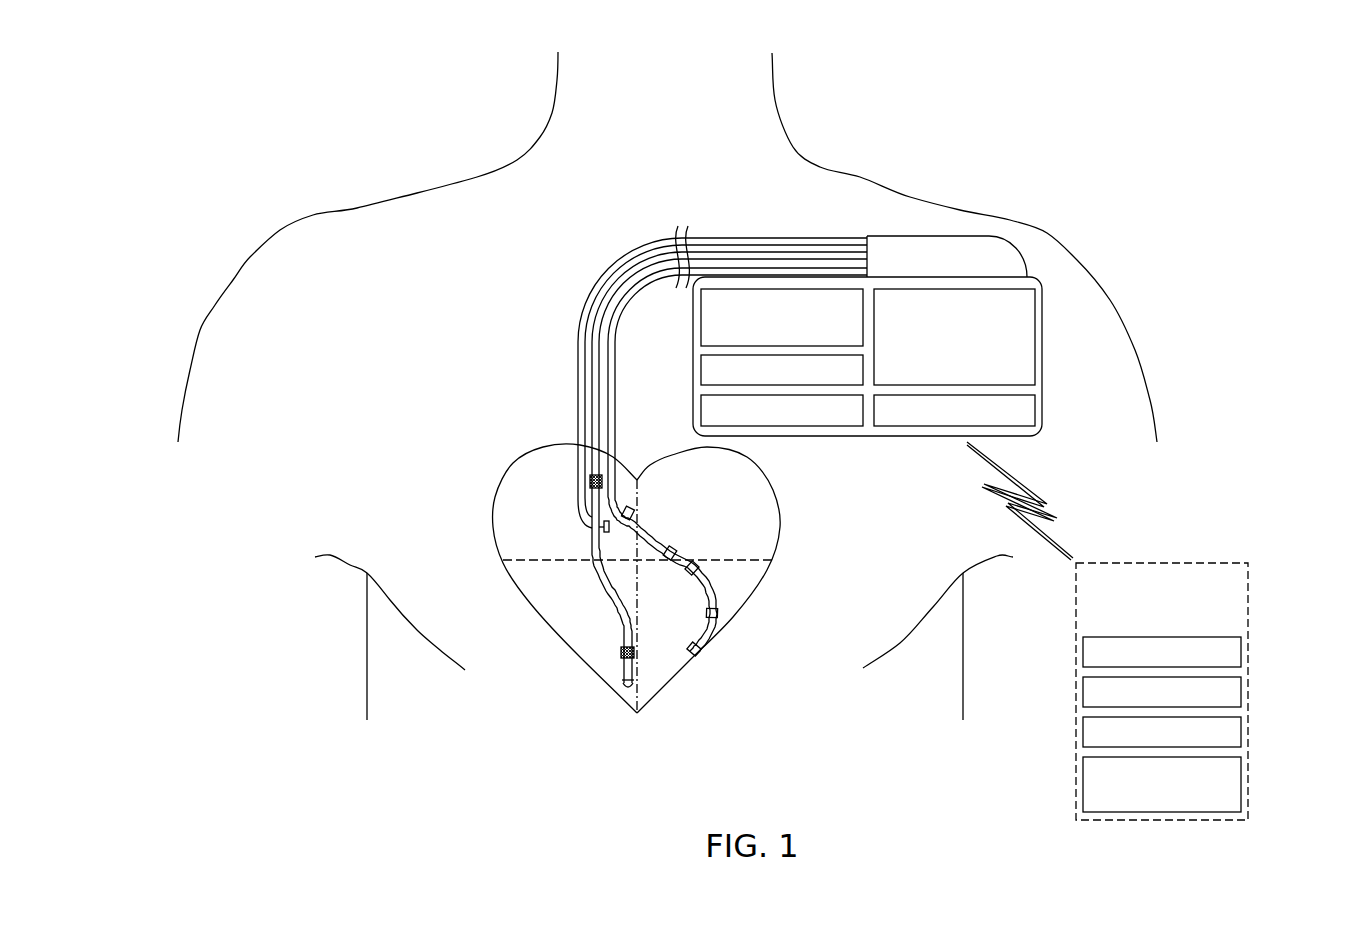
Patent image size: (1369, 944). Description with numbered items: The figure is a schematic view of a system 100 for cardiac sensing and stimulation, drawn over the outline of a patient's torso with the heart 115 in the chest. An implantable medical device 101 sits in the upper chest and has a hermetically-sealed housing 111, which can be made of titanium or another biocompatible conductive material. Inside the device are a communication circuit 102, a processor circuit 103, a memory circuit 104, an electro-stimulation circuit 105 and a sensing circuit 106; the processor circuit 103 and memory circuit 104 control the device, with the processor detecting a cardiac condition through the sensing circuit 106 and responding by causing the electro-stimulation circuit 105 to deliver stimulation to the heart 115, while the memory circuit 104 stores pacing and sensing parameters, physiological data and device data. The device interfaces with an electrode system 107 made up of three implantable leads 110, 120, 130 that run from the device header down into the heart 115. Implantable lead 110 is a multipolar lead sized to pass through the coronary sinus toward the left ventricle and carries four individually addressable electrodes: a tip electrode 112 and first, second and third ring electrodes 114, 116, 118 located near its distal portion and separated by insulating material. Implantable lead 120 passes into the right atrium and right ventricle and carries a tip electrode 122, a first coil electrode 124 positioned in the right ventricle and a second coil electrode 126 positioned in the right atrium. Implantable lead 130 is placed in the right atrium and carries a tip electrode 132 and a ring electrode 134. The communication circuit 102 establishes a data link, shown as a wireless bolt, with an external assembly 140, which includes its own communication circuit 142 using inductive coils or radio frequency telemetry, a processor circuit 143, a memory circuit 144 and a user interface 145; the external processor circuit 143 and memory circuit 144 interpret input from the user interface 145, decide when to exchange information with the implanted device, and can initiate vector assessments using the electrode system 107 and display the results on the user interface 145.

The system 100 is at (754, 436).
The implantable medical device 101 is at (875, 328).
The communication circuit 102 is at (700, 314).
The processor circuit 103 is at (700, 369).
The memory circuit 104 is at (700, 409).
The electro-stimulation circuit 105 is at (1037, 336).
The sensing circuit 106 is at (1037, 410).
The electrode system 107 is at (683, 440).
The implantable lead 110 is at (693, 472).
The housing 111 is at (868, 437).
The tip electrode 112 is at (710, 653).
The first ring electrode 114 is at (720, 612).
The heart 115 is at (516, 472).
The second ring electrode 116 is at (703, 577).
The third ring electrode 118 is at (673, 551).
The implantable lead 120 is at (683, 478).
The tip electrode 122 is at (626, 680).
The first coil electrode 124 is at (620, 652).
The second coil electrode 126 is at (590, 480).
The implantable lead 130 is at (701, 392).
The tip electrode 132 is at (634, 512).
The ring electrode 134 is at (594, 548).
The external assembly 140 is at (1203, 691).
The communication circuit 142 is at (1242, 784).
The processor circuit 143 is at (1242, 652).
The memory circuit 144 is at (1242, 692).
The user interface 145 is at (1242, 733).